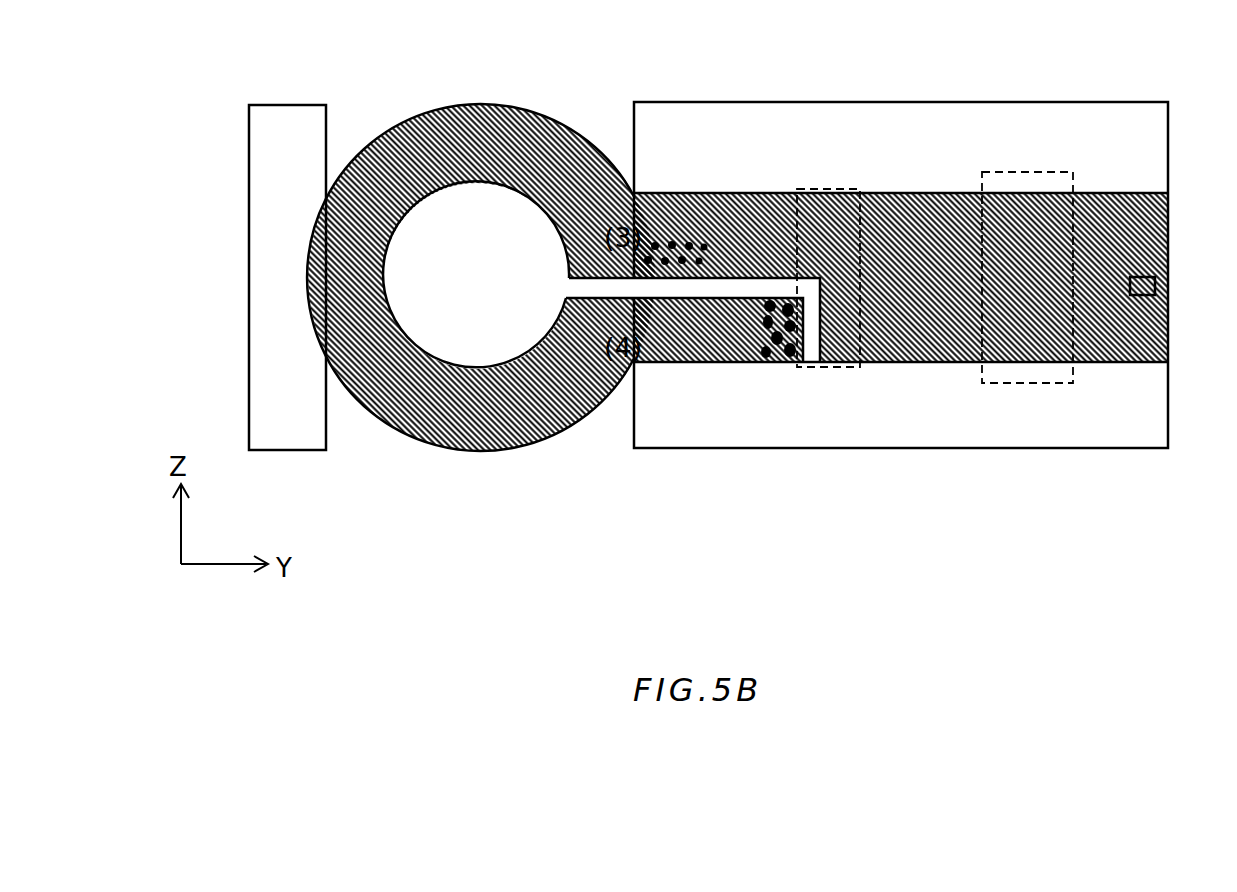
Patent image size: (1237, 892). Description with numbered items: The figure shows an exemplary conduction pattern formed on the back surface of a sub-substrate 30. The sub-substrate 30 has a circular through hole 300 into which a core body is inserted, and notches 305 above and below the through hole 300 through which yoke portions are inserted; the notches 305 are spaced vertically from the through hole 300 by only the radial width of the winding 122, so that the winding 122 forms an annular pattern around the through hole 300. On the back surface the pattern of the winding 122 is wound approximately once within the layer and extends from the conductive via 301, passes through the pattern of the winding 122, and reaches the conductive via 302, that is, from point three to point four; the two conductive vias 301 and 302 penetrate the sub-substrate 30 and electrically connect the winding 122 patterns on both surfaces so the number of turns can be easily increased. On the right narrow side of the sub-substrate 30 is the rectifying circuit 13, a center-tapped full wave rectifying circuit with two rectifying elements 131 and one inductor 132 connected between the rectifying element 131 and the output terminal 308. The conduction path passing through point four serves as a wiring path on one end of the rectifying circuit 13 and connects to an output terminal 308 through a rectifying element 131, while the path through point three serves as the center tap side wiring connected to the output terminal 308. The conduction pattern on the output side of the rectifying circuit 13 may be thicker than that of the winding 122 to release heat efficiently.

The sub-substrate 30 is at (1017, 70).
The rectifying circuit 13 is at (807, 167).
The rectifying element 131 is at (856, 192).
The inductor 132 is at (986, 390).
The winding 122 is at (310, 492).
The through hole 300 is at (386, 286).
The conductive via 301 is at (736, 192).
The conductive via 302 is at (745, 364).
The notch 305 is at (326, 150).
The output terminal 308 is at (1168, 276).